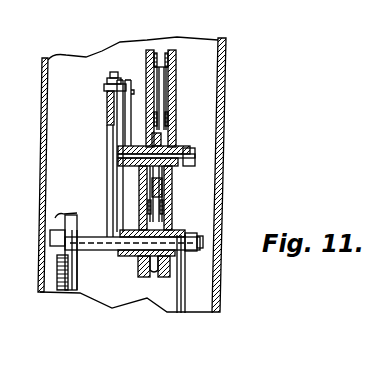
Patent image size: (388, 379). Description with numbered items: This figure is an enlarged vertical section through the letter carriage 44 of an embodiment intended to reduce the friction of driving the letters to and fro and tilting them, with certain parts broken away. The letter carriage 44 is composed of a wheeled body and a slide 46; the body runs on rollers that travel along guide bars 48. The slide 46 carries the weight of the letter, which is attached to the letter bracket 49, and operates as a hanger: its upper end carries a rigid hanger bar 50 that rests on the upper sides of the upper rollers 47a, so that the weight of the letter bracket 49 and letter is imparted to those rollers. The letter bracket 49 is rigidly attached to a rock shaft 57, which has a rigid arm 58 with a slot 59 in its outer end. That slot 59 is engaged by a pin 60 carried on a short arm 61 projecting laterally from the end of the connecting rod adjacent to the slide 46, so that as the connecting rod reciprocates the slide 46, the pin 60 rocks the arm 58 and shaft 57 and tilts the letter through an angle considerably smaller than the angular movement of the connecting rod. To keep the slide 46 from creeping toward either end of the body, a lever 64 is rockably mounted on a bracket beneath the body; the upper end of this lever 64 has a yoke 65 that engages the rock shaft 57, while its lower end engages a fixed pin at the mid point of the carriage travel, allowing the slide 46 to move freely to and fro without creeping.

The letter carriage 44 is at (170, 143).
The slide 46 is at (177, 51).
The upper rollers 47a is at (163, 87).
The guide bars 48 is at (169, 127).
The letter bracket 49 is at (70, 215).
The hanger bar 50 is at (162, 52).
The rock shaft 57 is at (126, 256).
The rigid arm 58 is at (113, 150).
The slot 59 is at (106, 101).
The pin 60 is at (113, 72).
The short arm 61 is at (124, 136).
The lever 64 is at (180, 313).
The yoke 65 is at (186, 233).